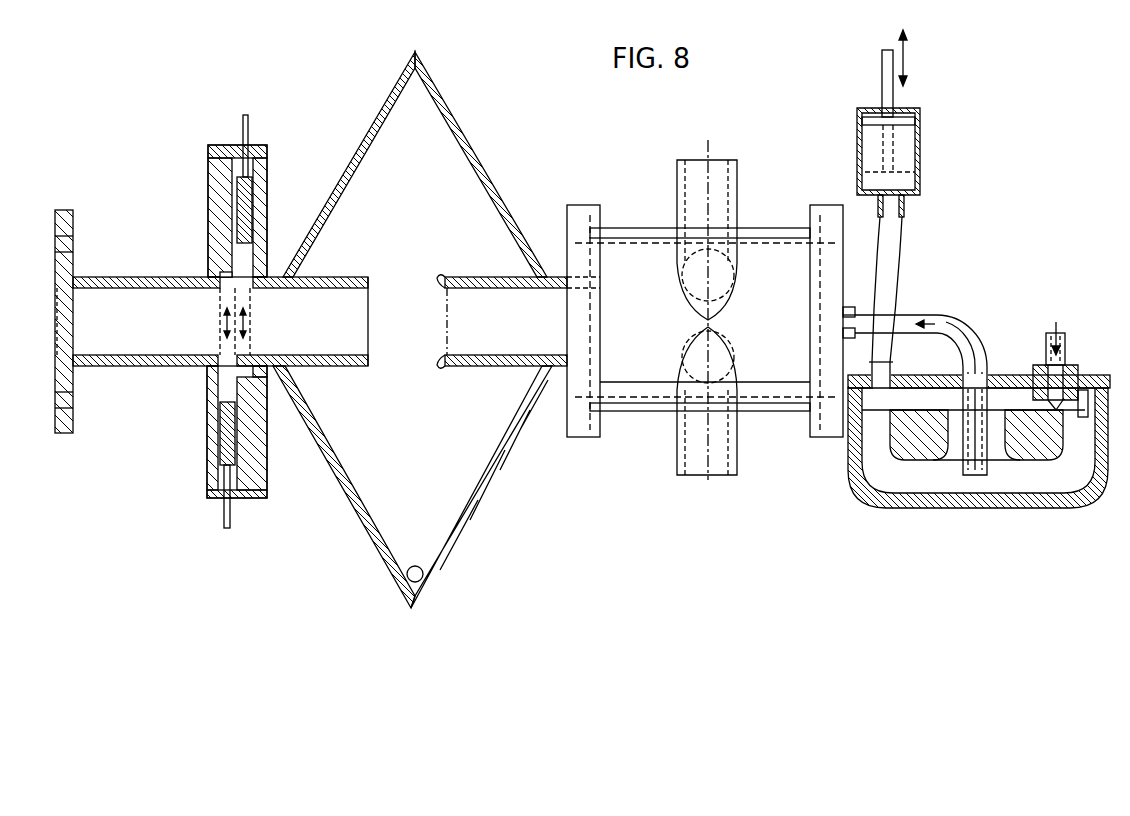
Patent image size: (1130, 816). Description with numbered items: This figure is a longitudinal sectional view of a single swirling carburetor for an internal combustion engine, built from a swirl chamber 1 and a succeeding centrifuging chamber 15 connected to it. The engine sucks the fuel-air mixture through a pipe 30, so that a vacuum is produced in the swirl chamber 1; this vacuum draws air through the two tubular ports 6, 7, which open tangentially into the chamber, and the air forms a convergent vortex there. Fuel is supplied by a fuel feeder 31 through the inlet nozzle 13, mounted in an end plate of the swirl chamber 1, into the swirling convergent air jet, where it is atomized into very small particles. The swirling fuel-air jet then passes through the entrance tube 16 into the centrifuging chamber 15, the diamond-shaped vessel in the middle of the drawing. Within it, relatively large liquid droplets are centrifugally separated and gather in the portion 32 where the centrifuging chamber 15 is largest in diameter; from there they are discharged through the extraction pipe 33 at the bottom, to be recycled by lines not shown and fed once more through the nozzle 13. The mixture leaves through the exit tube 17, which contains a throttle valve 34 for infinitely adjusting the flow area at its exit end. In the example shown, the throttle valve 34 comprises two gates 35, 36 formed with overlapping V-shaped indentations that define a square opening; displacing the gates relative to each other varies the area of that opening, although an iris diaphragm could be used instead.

The swirl chamber 1 is at (771, 192).
The tubular port 6 is at (681, 188).
The tubular port 7 is at (681, 440).
The inlet nozzle 13 is at (811, 325).
The centrifuging chamber 15 is at (473, 152).
The entrance tube 16 is at (503, 275).
The exit tube 17 is at (322, 283).
The pipe 30 is at (126, 366).
The fuel feeder 31 is at (1003, 312).
The largest-diameter portion of centrifuging chamber 32 is at (425, 540).
The extraction pipe 33 is at (418, 577).
The throttle valve 34 is at (278, 126).
The gate 35 is at (254, 200).
The gate 36 is at (219, 438).